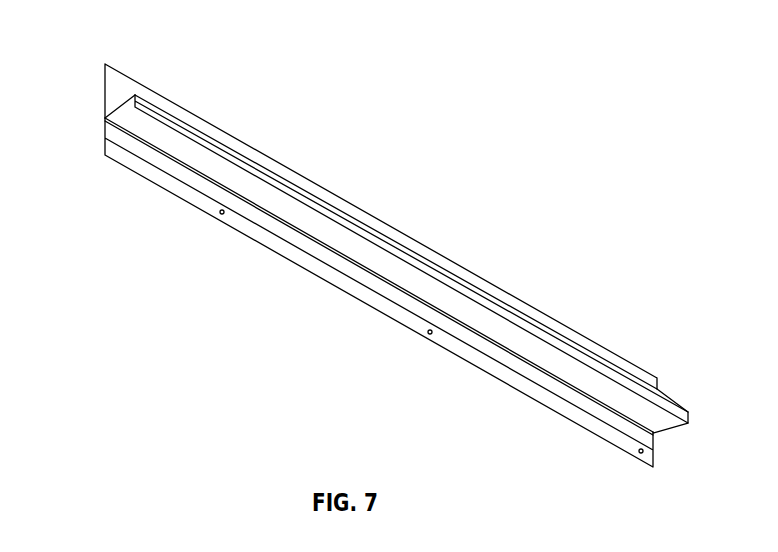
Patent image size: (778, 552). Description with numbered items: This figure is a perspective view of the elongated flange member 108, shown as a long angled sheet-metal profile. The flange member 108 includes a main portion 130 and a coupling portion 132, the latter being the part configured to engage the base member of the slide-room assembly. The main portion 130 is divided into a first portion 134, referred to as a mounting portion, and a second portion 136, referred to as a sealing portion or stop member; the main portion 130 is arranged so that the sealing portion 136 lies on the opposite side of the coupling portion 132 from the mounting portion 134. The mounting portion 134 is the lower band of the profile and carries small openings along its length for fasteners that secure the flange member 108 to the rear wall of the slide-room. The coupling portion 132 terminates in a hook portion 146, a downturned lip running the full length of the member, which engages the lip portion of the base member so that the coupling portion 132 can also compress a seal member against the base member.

The flange member 108 is at (360, 250).
The main portion 130 is at (96, 111).
The coupling portion 132 is at (220, 161).
The first portion 134 is at (96, 143).
The second portion 136 is at (96, 75).
The hook portion 146 is at (140, 86).